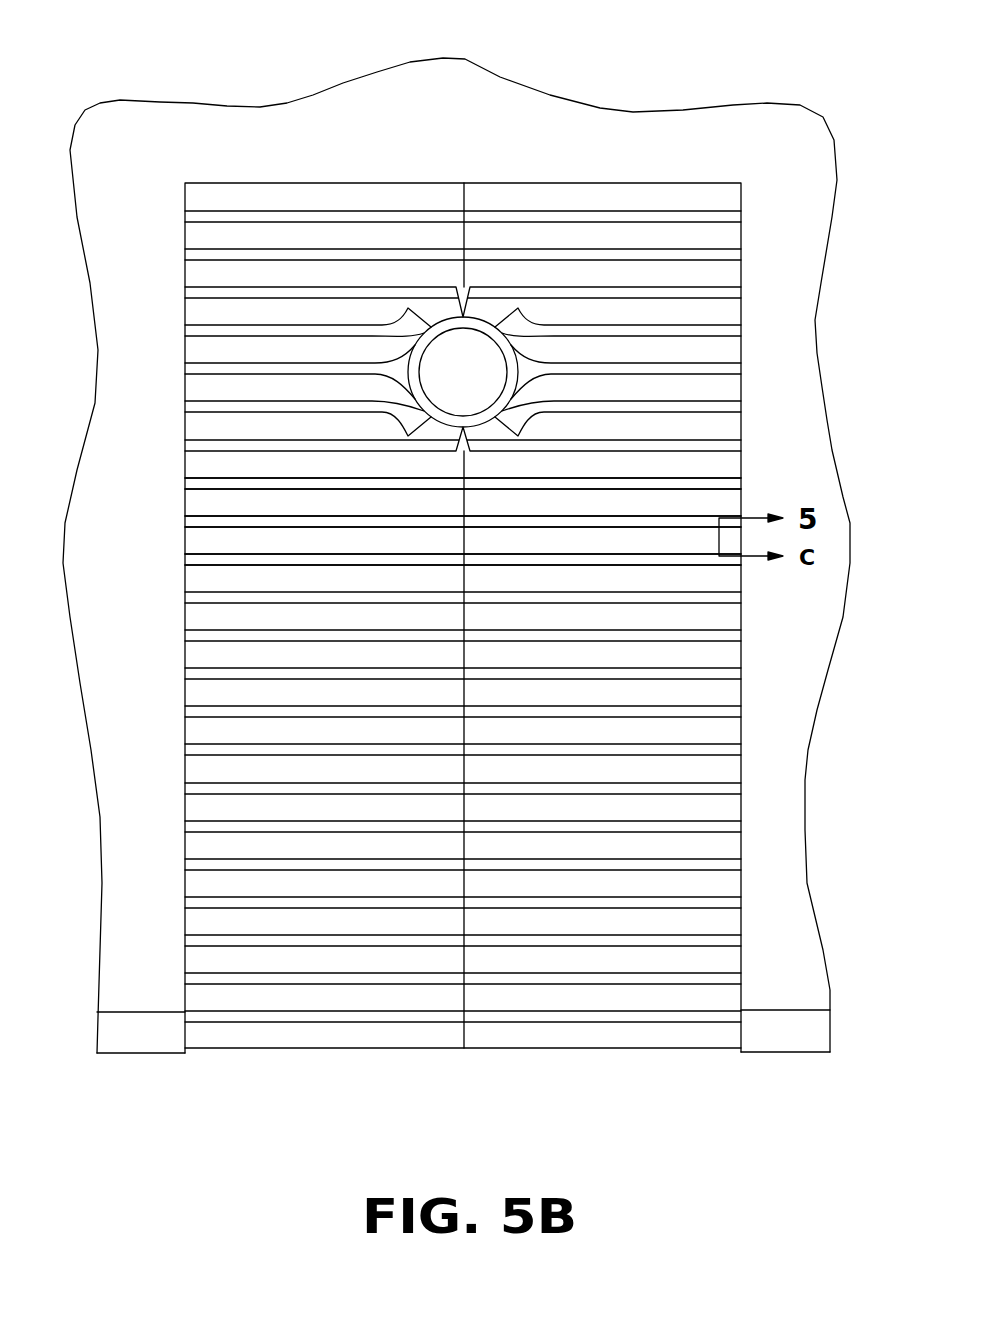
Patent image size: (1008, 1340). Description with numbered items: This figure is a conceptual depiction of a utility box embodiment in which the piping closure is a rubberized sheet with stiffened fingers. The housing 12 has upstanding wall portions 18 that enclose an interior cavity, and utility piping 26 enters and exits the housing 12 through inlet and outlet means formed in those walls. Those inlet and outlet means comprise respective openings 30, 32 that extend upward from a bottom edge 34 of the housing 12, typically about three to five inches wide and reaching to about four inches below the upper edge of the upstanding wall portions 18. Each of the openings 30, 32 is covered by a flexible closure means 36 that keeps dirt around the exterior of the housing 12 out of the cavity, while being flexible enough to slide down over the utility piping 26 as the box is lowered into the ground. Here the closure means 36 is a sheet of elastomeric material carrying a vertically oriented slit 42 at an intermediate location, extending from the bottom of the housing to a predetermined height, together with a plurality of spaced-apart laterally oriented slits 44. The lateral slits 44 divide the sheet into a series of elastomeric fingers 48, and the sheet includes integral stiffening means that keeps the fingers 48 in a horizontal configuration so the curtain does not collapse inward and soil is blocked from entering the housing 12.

The housing 12 is at (285, 103).
The upstanding wall portion 18 is at (138, 456).
The utility piping 26 is at (435, 340).
The opening 30 is at (755, 692).
The opening 32 is at (755, 692).
The bottom edge 34 is at (787, 1052).
The flexible closure means 36 is at (603, 1070).
The vertically oriented slit 42 is at (425, 1030).
The laterally oriented slit 44 is at (707, 402).
The elastomeric finger 48 is at (648, 218).